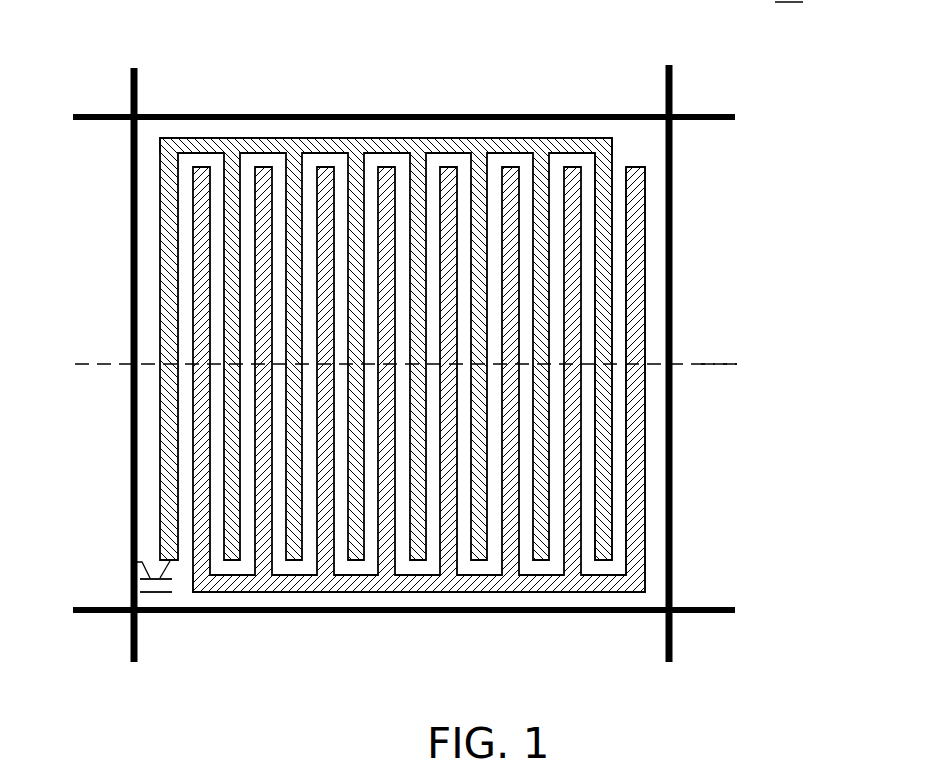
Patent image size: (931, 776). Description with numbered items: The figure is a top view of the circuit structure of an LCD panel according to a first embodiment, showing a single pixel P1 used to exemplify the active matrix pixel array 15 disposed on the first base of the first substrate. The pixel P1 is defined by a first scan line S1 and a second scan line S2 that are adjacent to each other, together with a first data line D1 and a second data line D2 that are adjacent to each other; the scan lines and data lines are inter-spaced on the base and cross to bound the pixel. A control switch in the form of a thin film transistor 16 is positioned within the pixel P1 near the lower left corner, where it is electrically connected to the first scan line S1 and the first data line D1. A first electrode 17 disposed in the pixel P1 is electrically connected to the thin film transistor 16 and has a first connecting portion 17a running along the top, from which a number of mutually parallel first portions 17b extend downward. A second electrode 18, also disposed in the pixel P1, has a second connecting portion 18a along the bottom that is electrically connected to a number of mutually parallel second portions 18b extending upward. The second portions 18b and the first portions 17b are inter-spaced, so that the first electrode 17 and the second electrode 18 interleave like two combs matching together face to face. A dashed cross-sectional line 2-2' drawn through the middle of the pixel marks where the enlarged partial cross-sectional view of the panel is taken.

The active matrix pixel array 15 is at (684, 112).
The thin film transistor 16 is at (147, 597).
The first electrode 17 is at (356, 134).
The first connecting portion 17a is at (478, 140).
The first portions 17b is at (605, 292).
The second electrode 18 is at (355, 596).
The second connecting portion 18a is at (512, 583).
The second portions 18b is at (642, 222).
The pixel P1 is at (625, 144).
The first data line D1 is at (134, 348).
The second data line D2 is at (669, 346).
The first scan line S1 is at (386, 610).
The second scan line S2 is at (386, 117).
The cross-sectional line 2 is at (401, 411).
The cross-sectional line 2' is at (724, 410).